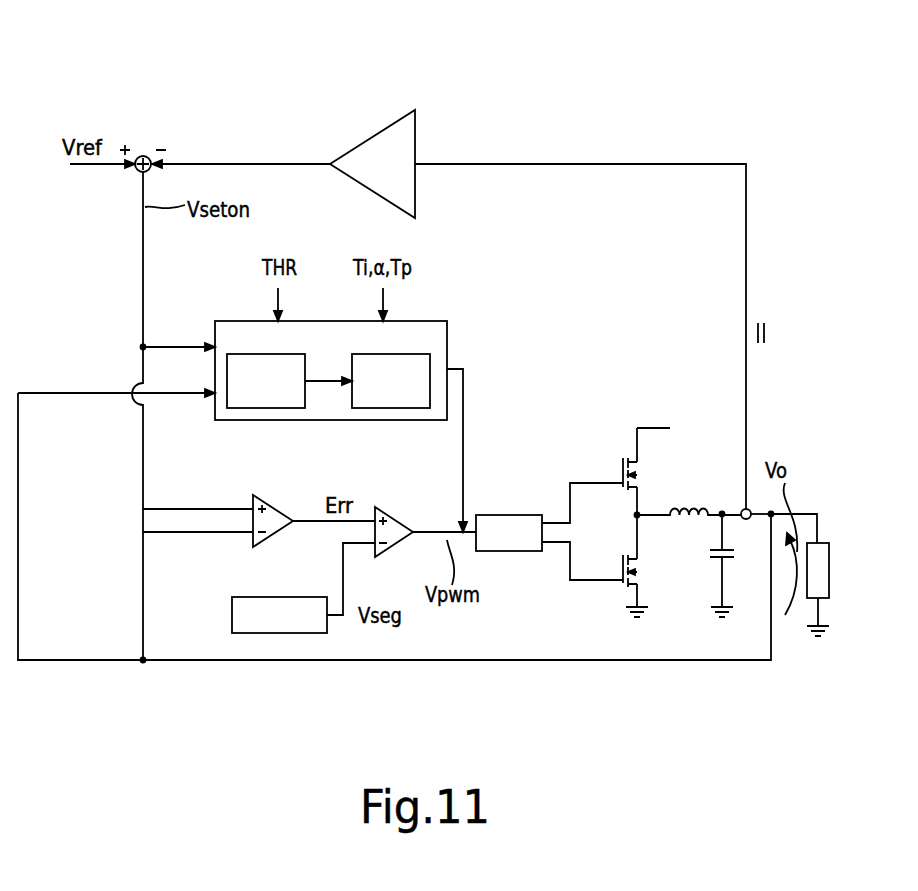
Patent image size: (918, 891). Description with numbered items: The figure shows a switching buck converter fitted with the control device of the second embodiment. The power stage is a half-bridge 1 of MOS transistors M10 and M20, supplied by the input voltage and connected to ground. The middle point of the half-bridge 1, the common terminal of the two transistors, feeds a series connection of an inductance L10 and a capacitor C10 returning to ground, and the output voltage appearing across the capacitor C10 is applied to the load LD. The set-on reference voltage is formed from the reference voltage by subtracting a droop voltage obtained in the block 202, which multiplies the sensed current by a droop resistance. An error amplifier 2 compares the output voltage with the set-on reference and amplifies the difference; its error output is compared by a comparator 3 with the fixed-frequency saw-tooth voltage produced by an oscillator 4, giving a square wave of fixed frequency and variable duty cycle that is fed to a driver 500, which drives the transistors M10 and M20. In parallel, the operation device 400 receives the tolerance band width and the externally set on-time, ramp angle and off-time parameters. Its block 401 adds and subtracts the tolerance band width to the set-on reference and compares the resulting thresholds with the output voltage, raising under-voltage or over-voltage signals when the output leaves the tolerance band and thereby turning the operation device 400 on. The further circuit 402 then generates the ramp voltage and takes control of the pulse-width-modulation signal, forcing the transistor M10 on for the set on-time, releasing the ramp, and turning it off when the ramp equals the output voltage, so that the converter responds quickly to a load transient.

The half-bridge 1 is at (649, 510).
The error amplifier 2 is at (282, 508).
The comparator 3 is at (404, 520).
The oscillator 4 is at (285, 596).
The block 202 is at (400, 125).
The operation device 400 is at (364, 375).
The block 401 is at (247, 408).
The further circuit 402 is at (372, 408).
The driver 500 is at (517, 513).
The transistor M10 is at (652, 474).
The transistor M20 is at (652, 571).
The inductance L10 is at (687, 536).
The capacitor C10 is at (739, 565).
The load LD is at (833, 570).